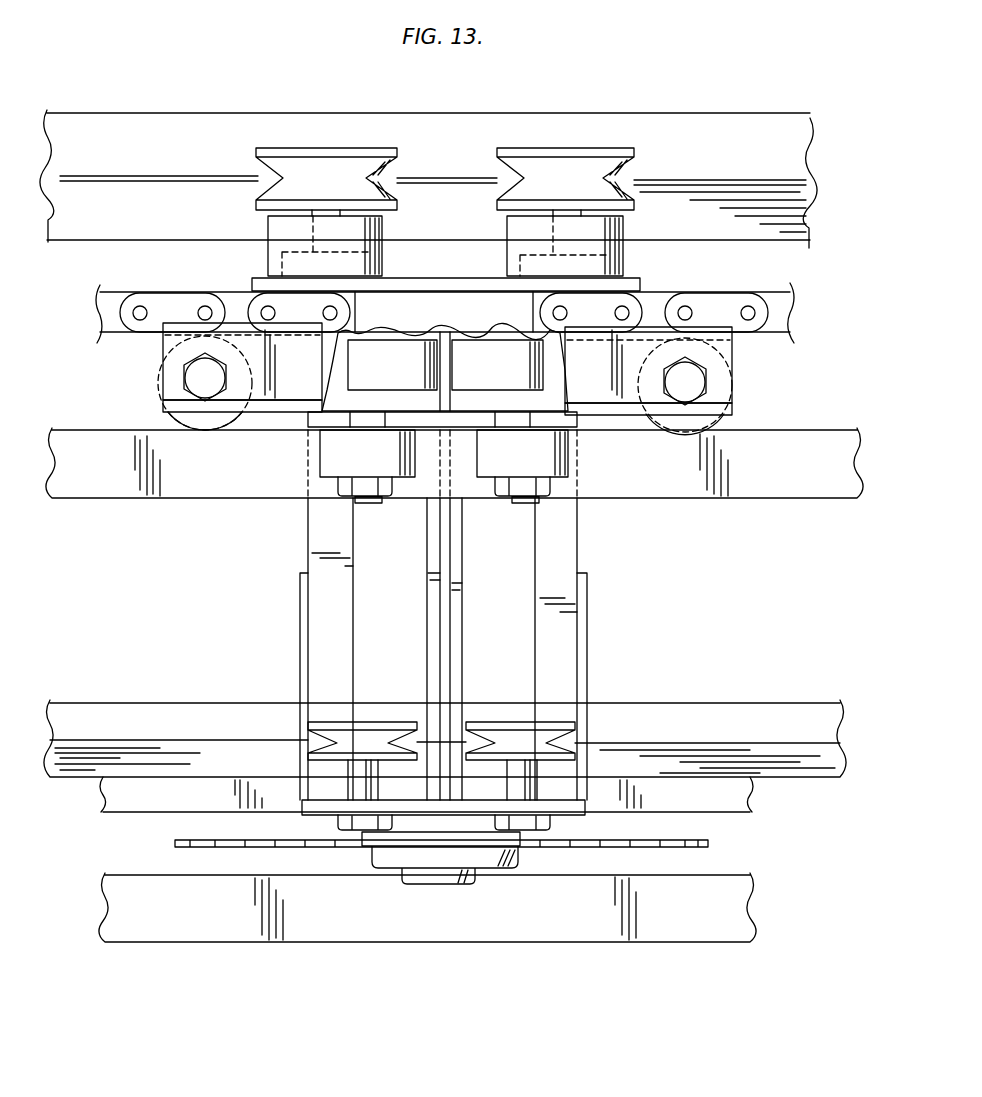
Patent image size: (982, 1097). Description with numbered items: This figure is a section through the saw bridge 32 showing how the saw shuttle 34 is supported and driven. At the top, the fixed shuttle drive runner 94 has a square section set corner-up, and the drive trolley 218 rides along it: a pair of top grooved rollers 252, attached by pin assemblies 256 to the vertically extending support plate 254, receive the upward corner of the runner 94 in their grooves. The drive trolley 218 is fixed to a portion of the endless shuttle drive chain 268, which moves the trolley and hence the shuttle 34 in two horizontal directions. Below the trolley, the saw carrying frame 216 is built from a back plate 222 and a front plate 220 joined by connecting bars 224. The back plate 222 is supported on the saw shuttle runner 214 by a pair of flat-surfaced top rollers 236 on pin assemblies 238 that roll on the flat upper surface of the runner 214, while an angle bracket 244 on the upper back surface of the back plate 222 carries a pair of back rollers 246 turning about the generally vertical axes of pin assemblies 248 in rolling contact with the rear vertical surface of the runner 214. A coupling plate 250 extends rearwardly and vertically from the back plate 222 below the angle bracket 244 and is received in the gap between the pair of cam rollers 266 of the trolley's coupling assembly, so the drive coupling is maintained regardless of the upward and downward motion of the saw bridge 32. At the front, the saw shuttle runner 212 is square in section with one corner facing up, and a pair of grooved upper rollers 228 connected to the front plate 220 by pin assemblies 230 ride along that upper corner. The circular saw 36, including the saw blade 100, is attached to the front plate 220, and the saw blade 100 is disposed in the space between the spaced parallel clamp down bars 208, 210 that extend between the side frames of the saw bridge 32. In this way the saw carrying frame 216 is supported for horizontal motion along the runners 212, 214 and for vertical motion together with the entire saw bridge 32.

The shuttle drive runner 94 is at (742, 140).
The top grooved rollers 252 is at (341, 147).
The pin assemblies 256 is at (508, 235).
The support plate 254 is at (640, 285).
The drive trolley 218 is at (262, 259).
The shuttle drive chain 268 is at (742, 298).
The angle bracket 244 is at (163, 344).
The back rollers 246 is at (180, 420).
The pin assemblies 248 is at (195, 380).
The saw bridge 32 is at (815, 420).
The coupling plate 250 is at (447, 407).
The cam rollers 266 is at (445, 365).
The back plate 222 is at (580, 418).
The pin assemblies 238 is at (367, 421).
The top rollers 236 is at (444, 466).
The saw shuttle runner 214 is at (774, 495).
The saw shuttle 34 is at (275, 520).
The connecting bars 224 is at (345, 613).
The saw carrying frame 216 is at (234, 436).
The saw shuttle runner 212 is at (802, 712).
The clamp down bar 210 is at (742, 797).
The grooved upper rollers 228 is at (393, 720).
The pin assemblies 230 is at (510, 788).
The front plate 220 is at (562, 812).
The saw blade 100 is at (663, 840).
The circular saw 36 is at (727, 863).
The clamp down bar 208 is at (718, 935).